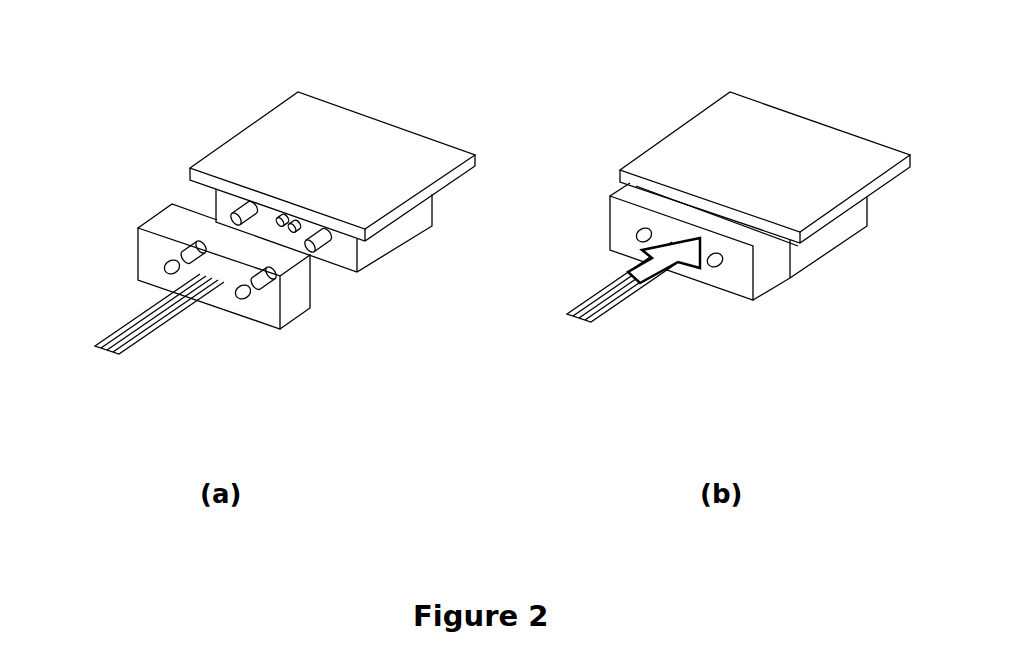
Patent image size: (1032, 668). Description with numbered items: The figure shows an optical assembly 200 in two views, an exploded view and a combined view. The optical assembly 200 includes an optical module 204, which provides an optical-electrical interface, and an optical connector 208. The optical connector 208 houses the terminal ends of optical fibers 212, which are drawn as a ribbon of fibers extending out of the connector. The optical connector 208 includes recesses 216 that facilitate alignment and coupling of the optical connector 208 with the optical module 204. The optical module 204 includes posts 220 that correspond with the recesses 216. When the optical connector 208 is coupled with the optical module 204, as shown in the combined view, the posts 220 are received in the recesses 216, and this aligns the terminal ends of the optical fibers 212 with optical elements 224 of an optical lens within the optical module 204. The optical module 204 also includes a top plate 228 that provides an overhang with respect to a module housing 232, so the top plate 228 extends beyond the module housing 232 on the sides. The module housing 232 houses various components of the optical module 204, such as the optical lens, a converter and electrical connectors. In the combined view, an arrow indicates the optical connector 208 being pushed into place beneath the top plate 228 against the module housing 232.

The optical assembly 200 is at (104, 47).
The optical module 204 is at (268, 127).
The optical connector 208 is at (290, 303).
The optical fibers 212 is at (130, 350).
The recesses 216 is at (197, 246).
The posts 220 is at (312, 248).
The optical elements 224 is at (298, 225).
The top plate 228 is at (427, 158).
The module housing 232 is at (410, 226).